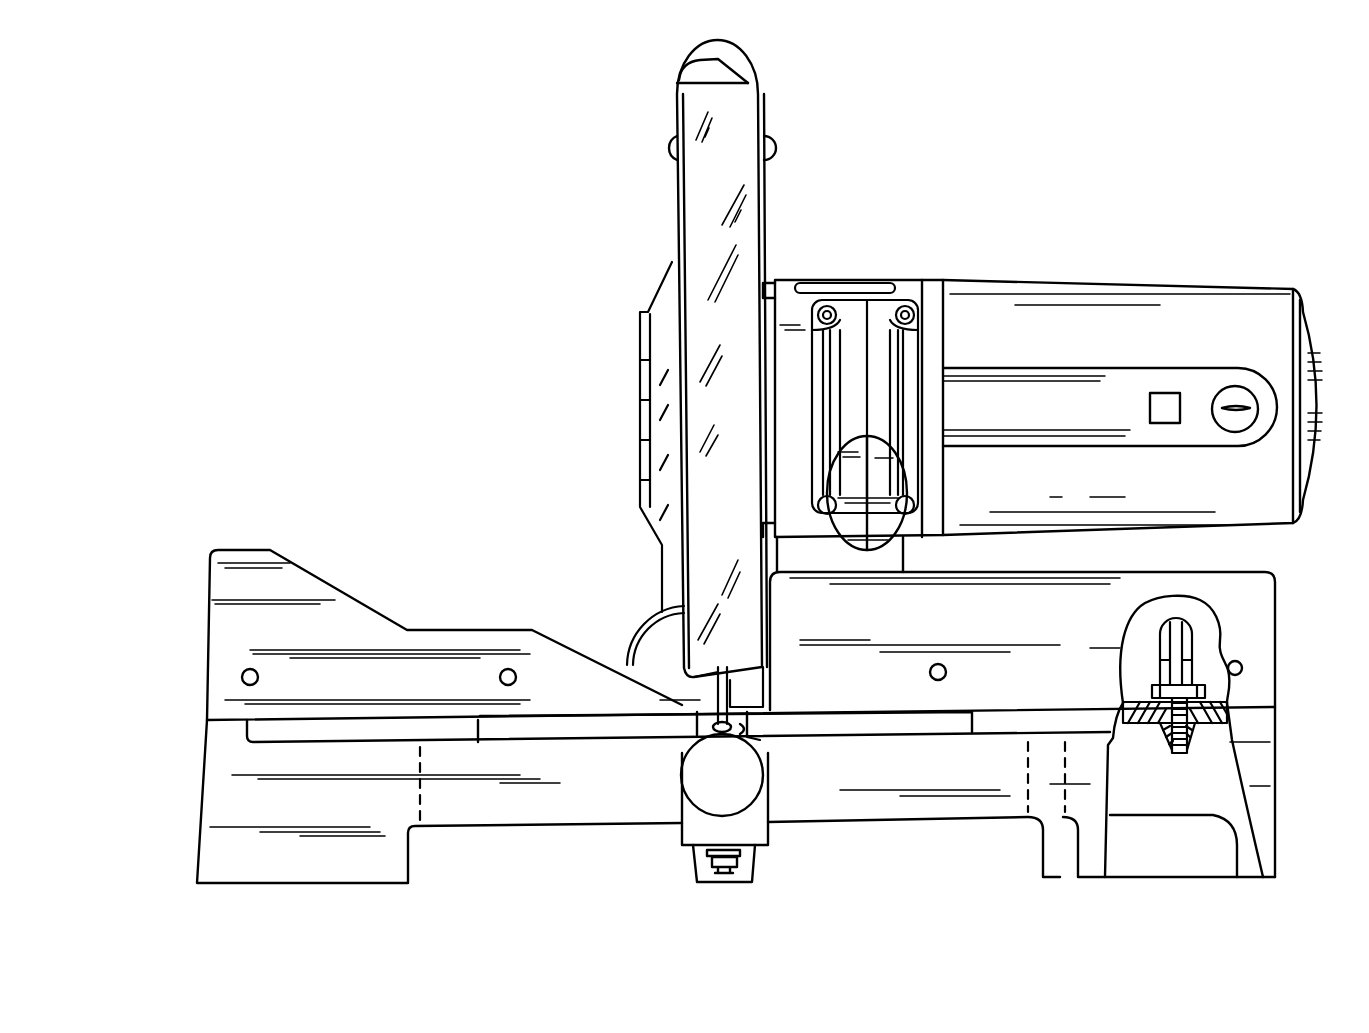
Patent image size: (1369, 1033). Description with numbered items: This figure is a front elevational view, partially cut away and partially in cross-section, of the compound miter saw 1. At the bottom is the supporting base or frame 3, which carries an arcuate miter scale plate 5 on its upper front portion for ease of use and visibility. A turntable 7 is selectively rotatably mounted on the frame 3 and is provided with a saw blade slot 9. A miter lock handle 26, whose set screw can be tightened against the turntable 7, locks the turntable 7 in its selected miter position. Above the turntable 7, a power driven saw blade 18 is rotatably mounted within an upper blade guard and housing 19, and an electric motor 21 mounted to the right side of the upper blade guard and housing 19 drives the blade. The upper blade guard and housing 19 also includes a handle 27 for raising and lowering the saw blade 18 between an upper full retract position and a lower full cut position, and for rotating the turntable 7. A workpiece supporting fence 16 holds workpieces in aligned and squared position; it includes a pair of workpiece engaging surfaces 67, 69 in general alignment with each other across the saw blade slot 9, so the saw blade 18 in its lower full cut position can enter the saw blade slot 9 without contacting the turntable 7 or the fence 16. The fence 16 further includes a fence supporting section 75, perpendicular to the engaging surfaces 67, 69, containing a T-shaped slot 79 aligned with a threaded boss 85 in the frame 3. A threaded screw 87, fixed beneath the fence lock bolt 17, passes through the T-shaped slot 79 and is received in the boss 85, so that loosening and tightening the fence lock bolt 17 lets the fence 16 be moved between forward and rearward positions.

The compound miter saw 1 is at (598, 128).
The supporting base or frame 3 is at (214, 800).
The arcuate miter scale plate 5 is at (913, 738).
The turntable 7 is at (881, 724).
The saw blade slot 9 is at (760, 740).
The workpiece supporting fence 16 is at (338, 574).
The fence lock bolt 17 is at (1188, 626).
The power driven saw blade 18 is at (733, 690).
The upper blade guard and housing 19 is at (772, 186).
The electric motor 21 is at (1046, 283).
The miter lock handle 26 is at (700, 782).
The handle 27 is at (886, 485).
The workpiece engaging surface 67 is at (1110, 593).
The workpiece engaging surface 69 is at (374, 640).
The fence supporting section 75 is at (1135, 702).
The T-shaped slot 79 is at (1210, 695).
The threaded boss 85 is at (1195, 742).
The threaded screw 87 is at (1170, 742).